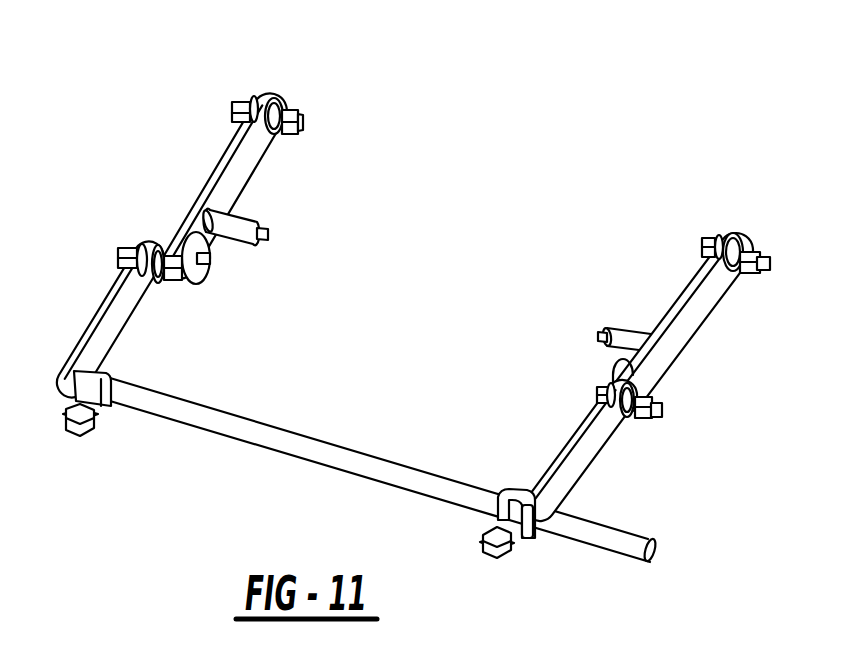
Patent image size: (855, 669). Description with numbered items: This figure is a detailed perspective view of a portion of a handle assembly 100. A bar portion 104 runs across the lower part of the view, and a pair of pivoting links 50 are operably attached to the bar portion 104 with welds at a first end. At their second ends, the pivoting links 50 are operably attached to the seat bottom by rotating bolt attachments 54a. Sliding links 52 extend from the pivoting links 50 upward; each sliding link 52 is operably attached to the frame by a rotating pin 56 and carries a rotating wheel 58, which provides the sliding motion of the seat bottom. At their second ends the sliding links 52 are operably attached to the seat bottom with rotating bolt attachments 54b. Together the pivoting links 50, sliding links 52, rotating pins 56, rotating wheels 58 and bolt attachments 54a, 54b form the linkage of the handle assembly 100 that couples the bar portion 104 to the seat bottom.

The handle assembly 100 is at (438, 294).
The bar portion 104 is at (200, 418).
The pivoting links 50 is at (572, 462).
The sliding links 52 is at (680, 317).
The rotating bolt attachments 54a is at (122, 252).
The rotating bolt attachments 54b is at (232, 110).
The rotating pins 56 is at (240, 232).
The rotating wheels 58 is at (197, 272).